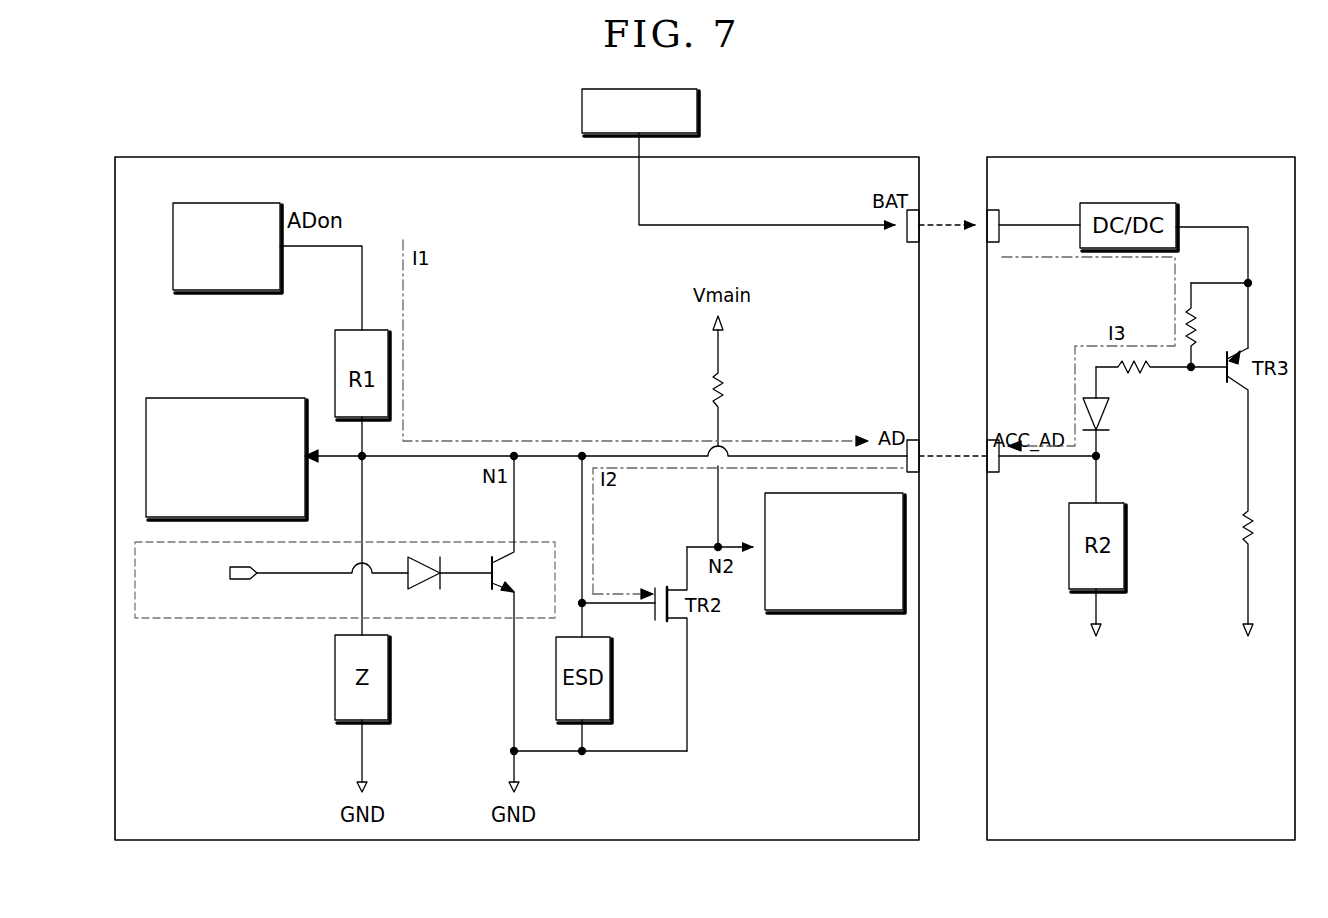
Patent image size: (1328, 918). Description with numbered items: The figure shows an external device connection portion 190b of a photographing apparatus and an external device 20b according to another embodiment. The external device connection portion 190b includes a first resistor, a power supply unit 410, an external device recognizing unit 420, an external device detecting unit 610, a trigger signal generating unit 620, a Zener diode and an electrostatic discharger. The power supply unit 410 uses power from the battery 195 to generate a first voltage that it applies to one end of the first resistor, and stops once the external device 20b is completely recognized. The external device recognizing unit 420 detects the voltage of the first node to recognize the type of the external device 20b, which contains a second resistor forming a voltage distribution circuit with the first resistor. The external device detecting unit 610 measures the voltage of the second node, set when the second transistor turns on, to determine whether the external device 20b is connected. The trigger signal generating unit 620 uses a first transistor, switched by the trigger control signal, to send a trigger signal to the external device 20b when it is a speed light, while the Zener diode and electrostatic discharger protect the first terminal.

The battery 195 is at (698, 105).
The external device connection portion 190b is at (802, 157).
The external device 20b is at (1175, 157).
The power supply unit 410 is at (220, 202).
The external device recognizing unit 420 is at (220, 398).
The external device detecting unit 610 is at (838, 610).
The trigger signal generating unit 620 is at (235, 619).